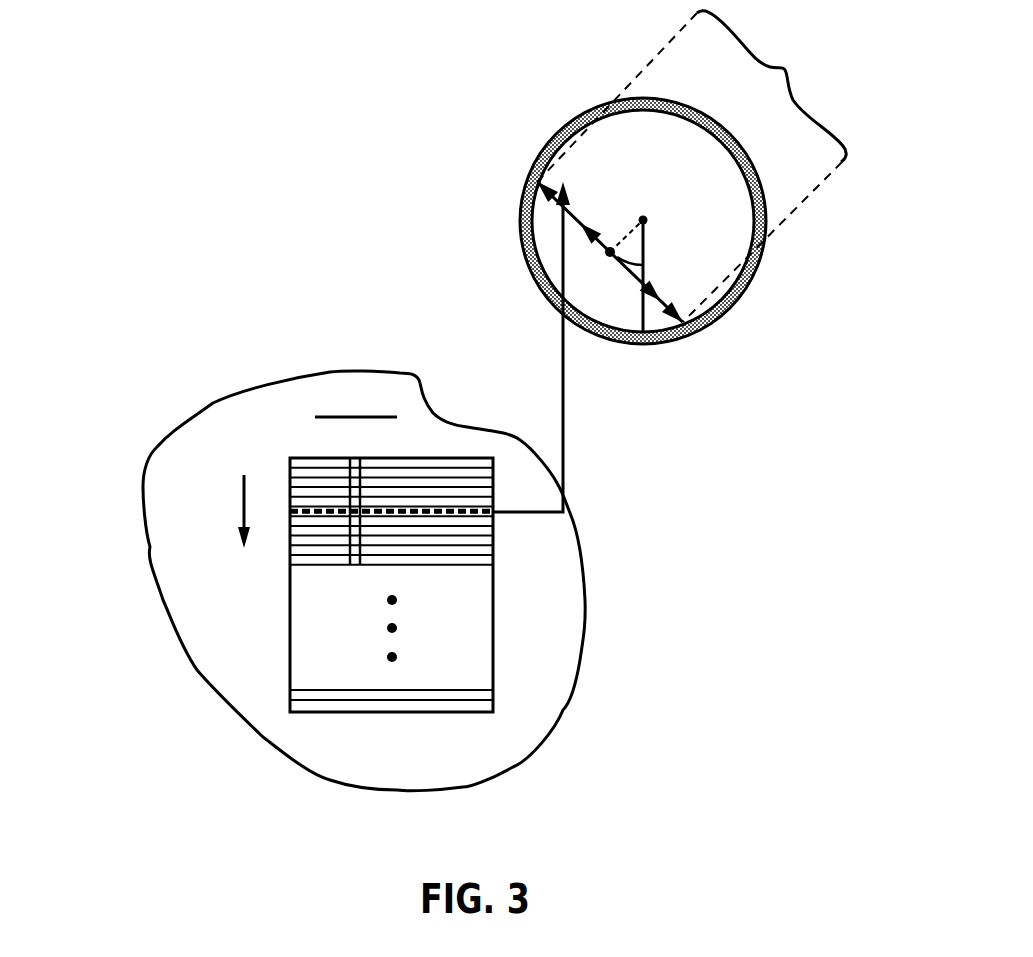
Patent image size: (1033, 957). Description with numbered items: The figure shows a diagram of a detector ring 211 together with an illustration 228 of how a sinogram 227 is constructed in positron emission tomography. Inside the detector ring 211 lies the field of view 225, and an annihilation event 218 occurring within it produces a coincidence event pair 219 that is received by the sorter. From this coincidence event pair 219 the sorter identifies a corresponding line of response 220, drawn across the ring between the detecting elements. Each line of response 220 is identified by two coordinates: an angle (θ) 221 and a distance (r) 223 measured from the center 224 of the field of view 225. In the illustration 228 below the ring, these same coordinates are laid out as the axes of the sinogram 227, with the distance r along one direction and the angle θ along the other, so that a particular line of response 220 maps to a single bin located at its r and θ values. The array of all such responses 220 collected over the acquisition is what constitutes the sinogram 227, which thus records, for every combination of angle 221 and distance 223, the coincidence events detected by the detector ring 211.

The detector ring 211 is at (760, 267).
The annihilation event 218 is at (610, 252).
The coincidence event pair 219 is at (786, 70).
The line of response 220 is at (560, 205).
The angle (θ) 221 is at (634, 262).
The distance (r) 223 is at (610, 248).
The center 224 is at (643, 220).
The field of view 225 is at (695, 298).
The sinogram 227 is at (432, 755).
The illustration 228 is at (330, 372).